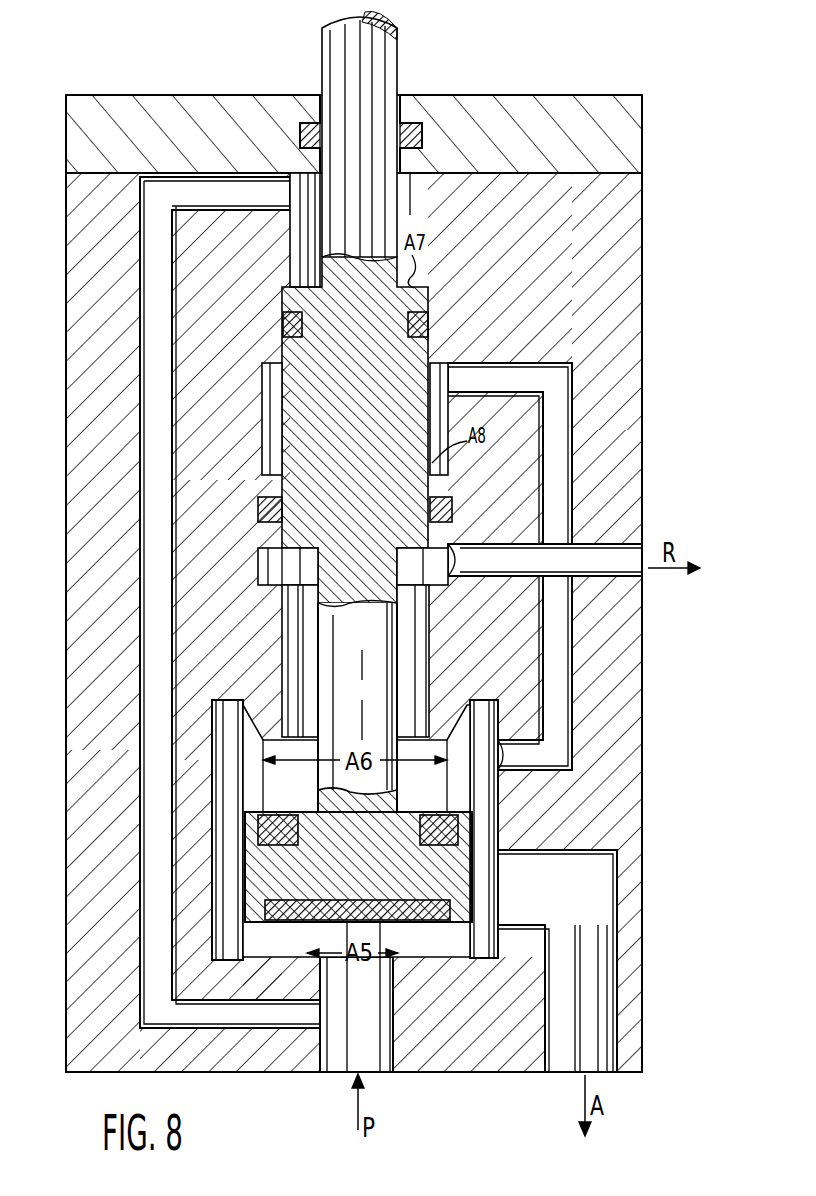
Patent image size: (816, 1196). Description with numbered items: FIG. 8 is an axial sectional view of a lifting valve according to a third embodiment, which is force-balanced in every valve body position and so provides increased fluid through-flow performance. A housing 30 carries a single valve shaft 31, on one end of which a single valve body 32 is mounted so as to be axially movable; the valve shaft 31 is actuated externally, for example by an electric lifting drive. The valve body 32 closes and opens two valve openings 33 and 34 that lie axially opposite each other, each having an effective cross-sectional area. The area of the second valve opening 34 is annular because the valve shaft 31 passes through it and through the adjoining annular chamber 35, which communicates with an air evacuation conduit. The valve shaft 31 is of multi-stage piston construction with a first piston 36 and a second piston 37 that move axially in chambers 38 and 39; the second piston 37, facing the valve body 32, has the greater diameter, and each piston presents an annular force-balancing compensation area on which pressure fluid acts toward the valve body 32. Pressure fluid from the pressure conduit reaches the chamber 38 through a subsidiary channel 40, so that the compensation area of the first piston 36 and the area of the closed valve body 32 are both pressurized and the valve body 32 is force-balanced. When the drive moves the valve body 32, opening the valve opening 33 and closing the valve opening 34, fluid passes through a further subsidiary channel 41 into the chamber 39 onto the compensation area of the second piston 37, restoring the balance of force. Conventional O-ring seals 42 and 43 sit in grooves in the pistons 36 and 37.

The housing 30 is at (626, 265).
The valve shaft 31 is at (373, 66).
The valve body 32 is at (396, 843).
The valve opening 33 is at (392, 928).
The valve opening 34 is at (400, 740).
The annular chamber 35 is at (406, 631).
The first piston 36 is at (392, 300).
The second piston 37 is at (432, 490).
The chamber 38 is at (310, 188).
The chamber 39 is at (274, 414).
The subsidiary channel 40 is at (152, 520).
The further subsidiary channel 41 is at (560, 420).
The O-ring seal 42 is at (428, 328).
The O-ring seal 43 is at (450, 516).